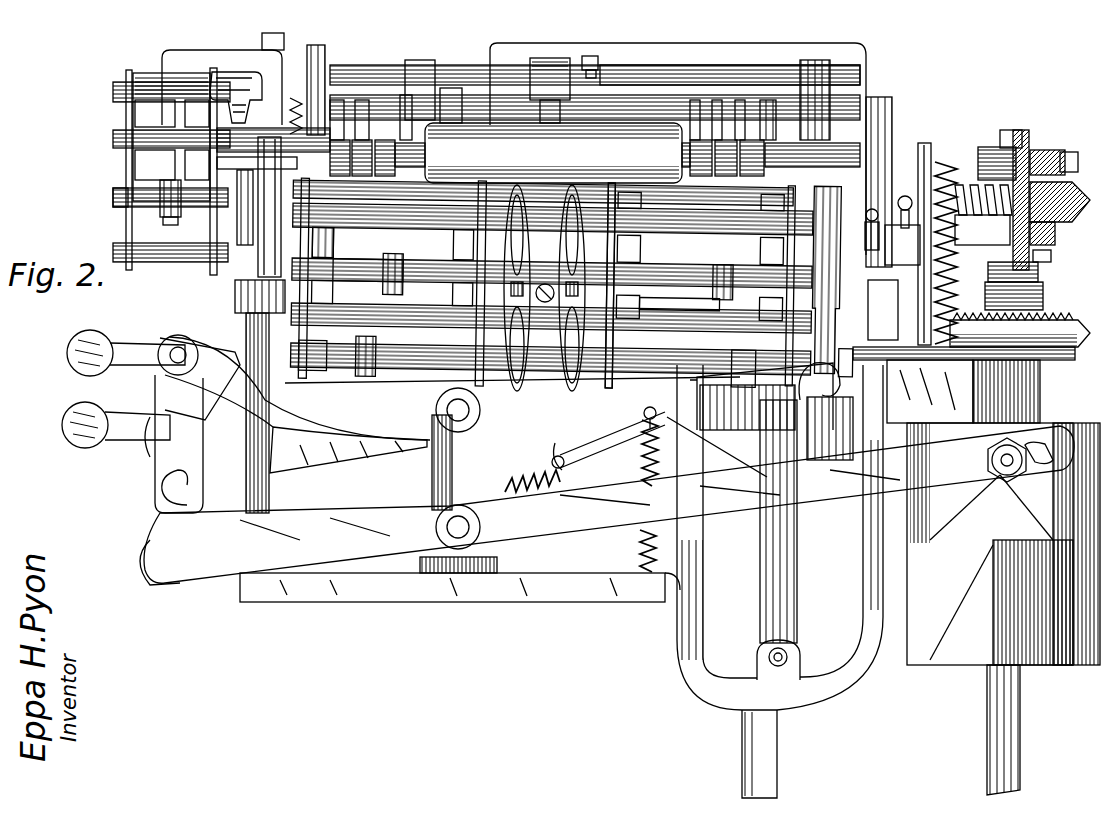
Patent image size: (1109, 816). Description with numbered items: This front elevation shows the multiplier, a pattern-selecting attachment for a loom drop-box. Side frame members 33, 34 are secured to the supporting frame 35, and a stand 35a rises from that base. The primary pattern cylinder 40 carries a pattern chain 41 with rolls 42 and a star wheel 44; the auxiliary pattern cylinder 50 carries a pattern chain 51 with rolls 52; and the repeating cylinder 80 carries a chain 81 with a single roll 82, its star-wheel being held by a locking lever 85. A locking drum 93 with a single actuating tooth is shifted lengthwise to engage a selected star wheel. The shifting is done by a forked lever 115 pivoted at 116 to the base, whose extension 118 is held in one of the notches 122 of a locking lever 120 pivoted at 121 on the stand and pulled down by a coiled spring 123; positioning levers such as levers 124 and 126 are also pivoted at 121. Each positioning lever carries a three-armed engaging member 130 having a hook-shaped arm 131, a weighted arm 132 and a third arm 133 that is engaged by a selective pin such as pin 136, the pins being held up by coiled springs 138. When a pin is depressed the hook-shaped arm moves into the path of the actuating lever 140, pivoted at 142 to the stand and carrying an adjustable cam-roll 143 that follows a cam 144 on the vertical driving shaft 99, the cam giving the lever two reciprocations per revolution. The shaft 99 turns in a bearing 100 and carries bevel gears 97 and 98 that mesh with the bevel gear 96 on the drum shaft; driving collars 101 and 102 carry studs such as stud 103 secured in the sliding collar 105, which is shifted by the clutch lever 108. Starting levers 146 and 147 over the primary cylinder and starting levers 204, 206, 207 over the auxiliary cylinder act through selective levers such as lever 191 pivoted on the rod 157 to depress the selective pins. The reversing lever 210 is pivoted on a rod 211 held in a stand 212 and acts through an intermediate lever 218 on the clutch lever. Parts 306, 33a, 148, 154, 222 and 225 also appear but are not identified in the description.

The repeating cylinder 80 is at (142, 162).
The chain 81 is at (114, 207).
The single roll 82 is at (166, 214).
The selective pin 136 is at (244, 212).
The coiled springs 138 is at (228, 74).
The locking lever 85 is at (325, 50).
The side frame member 34 is at (269, 207).
The supporting frame 35 is at (268, 320).
The selective lever 191 is at (410, 76).
The rod 157 is at (432, 98).
The stand 212 is at (545, 60).
The reversing lever 210 is at (608, 50).
The rod 211 is at (660, 70).
The cylinder 306 is at (553, 153).
The starting lever 204 is at (340, 158).
The starting lever 207 is at (364, 158).
The starting lever 206 is at (389, 158).
The starting lever 146 is at (699, 158).
The starting lever 147 is at (726, 158).
The collar 148 is at (752, 158).
The auxiliary pattern cylinder 50 is at (332, 246).
The pattern chain 51 is at (344, 264).
The rolls 52 is at (392, 255).
The locking drum 93 is at (418, 330).
The pattern chain 41 is at (608, 248).
The rolls 42 is at (715, 258).
The primary pattern cylinder 40 is at (630, 292).
The side frame member 33 is at (816, 250).
The plate 33a is at (844, 356).
The finger 154 is at (528, 344).
The star wheel 44 is at (566, 358).
The rod 222 is at (922, 143).
The intermediate lever 218 is at (892, 230).
The vertical driving shaft 99 is at (1010, 140).
The bevel gear 98 is at (1068, 190).
The stud 103 is at (982, 230).
The driving collar 101 is at (1052, 232).
The sliding collar 105 is at (1052, 256).
The clutch lever 108 is at (1040, 272).
The driving collar 102 is at (1045, 296).
The bevel gear 97 is at (1023, 329).
The bevel gear 96 is at (926, 320).
The bracket 225 is at (880, 312).
The bearing 100 is at (1025, 382).
The cam 144 is at (920, 664).
The positioning lever 124 is at (306, 462).
The extension 118 is at (765, 385).
The notches 122 is at (819, 381).
The pivot 121 is at (470, 413).
The positioning lever 126 is at (552, 440).
The locking lever 120 is at (580, 432).
The coiled spring 123 is at (581, 496).
The stand 35a is at (432, 470).
The actuating lever 140 is at (210, 568).
The pivot 142 is at (470, 530).
The cam-roll 143 is at (986, 460).
The forked lever 115 is at (752, 592).
The pivot 116 is at (768, 656).
The weighted arm 132 is at (98, 345).
The three-armed engaging member 130 is at (124, 348).
The third arm 133 is at (240, 340).
The hook-shaped arm 131 is at (192, 478).